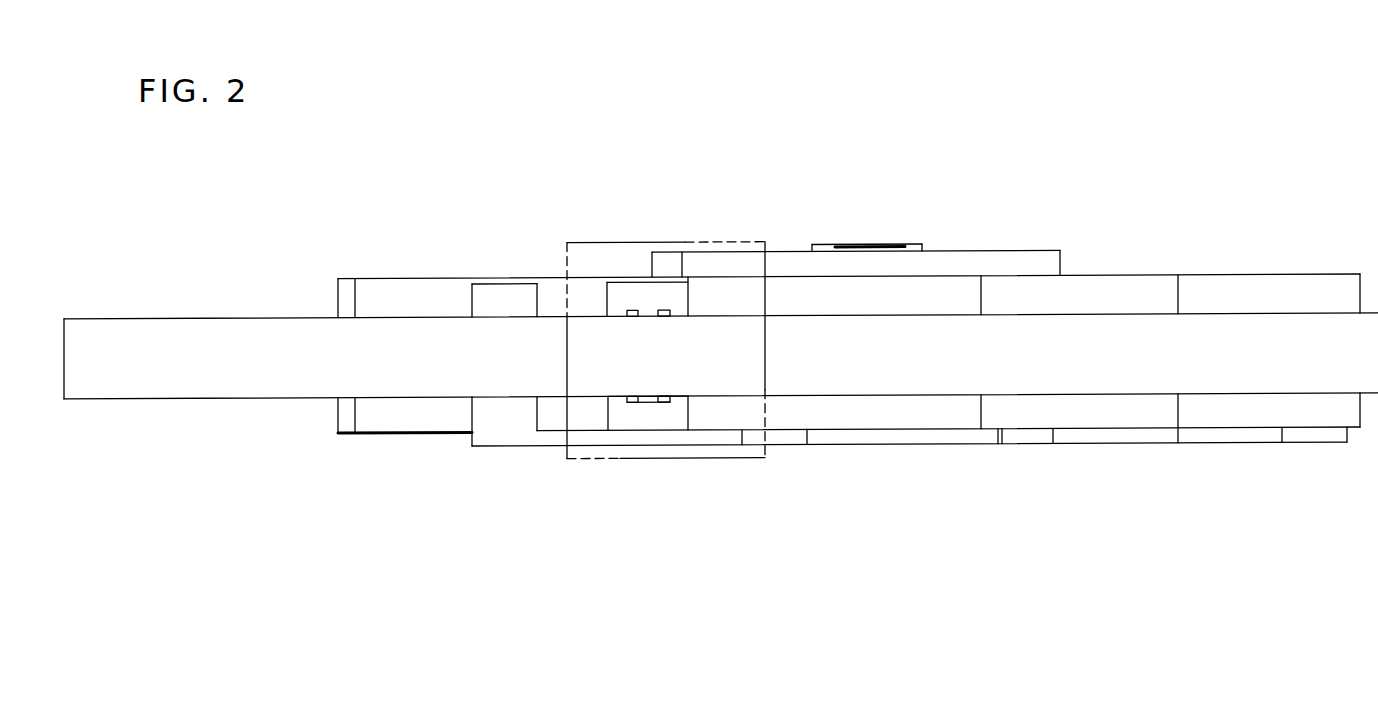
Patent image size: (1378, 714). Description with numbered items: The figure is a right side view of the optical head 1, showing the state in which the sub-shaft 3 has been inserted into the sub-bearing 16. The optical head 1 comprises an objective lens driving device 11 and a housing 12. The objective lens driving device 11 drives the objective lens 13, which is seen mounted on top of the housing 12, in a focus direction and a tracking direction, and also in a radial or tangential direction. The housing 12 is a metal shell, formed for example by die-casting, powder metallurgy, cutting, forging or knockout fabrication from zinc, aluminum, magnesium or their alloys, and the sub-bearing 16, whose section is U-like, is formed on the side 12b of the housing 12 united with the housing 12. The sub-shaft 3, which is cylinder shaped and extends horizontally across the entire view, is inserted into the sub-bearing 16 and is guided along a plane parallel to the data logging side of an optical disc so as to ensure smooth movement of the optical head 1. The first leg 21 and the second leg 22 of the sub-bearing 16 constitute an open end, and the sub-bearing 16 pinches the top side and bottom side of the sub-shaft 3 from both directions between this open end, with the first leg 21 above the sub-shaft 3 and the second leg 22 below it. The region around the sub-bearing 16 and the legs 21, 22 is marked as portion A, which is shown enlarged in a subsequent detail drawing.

The optical head 1 is at (1198, 235).
The sub-shaft 3 is at (212, 396).
The objective lens driving device 11 is at (992, 253).
The housing 12 is at (423, 300).
The side of housing 12b is at (943, 415).
The objective lens 13 is at (863, 247).
The sub-bearing 16 is at (643, 418).
The 1st leg 21 is at (647, 290).
The 2nd leg 22 is at (665, 418).
The portion A is at (633, 239).